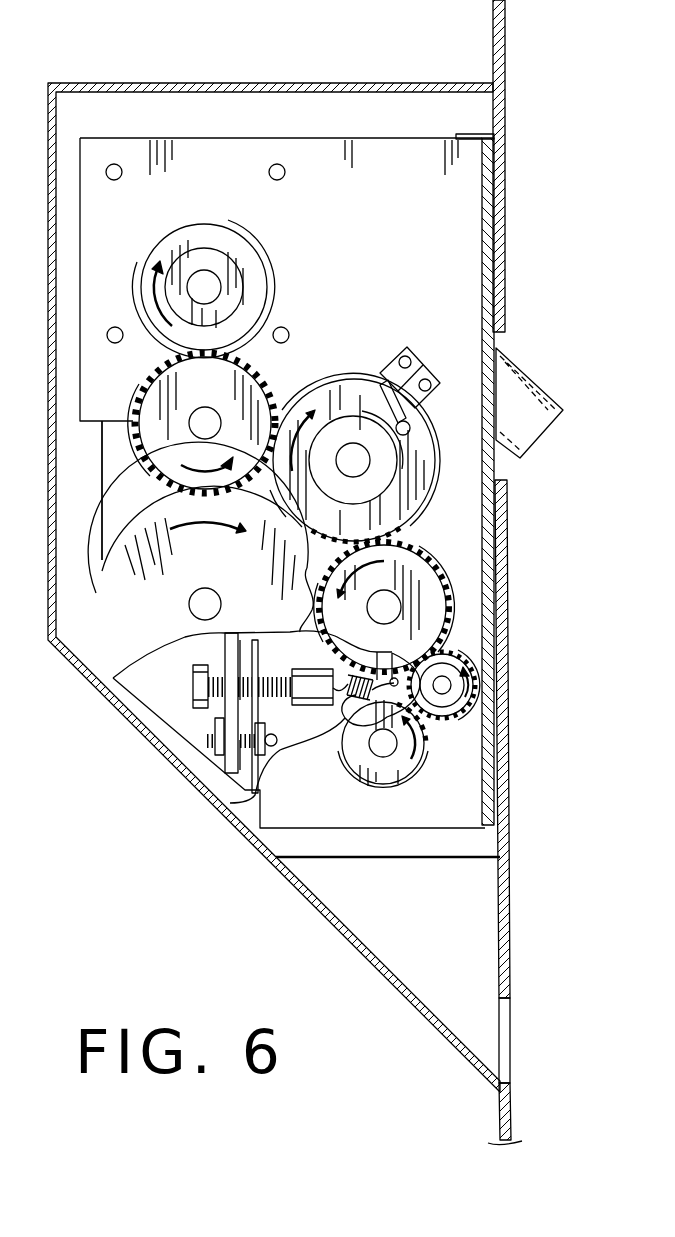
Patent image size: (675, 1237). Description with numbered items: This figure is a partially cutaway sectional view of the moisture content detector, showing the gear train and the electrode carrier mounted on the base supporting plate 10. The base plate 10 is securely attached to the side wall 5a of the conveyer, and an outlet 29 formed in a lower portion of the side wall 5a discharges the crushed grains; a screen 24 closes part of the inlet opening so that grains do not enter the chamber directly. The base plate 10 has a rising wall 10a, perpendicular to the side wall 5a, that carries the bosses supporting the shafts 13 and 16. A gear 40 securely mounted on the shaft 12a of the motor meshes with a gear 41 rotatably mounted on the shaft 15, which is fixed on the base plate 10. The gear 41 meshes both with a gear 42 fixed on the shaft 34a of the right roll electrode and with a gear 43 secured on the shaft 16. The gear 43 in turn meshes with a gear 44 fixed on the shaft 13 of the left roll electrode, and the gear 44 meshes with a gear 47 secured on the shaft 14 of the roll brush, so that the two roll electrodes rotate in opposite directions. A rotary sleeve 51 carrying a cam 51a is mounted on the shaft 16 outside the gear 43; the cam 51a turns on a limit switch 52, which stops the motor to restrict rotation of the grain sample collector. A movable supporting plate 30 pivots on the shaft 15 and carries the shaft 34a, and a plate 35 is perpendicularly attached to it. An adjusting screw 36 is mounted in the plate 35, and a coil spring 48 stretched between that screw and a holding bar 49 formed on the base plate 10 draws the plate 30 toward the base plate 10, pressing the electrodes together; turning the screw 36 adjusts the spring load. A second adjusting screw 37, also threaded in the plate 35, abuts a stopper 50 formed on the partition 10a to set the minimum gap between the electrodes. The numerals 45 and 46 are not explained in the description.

The base supporting plate 10 is at (487, 217).
The rising wall 10a is at (227, 152).
The screen 24 is at (502, 182).
The side wall 5a is at (505, 947).
The outlet 29 is at (537, 1053).
The gear 40 is at (233, 289).
The shaft of the motor 12a is at (218, 290).
The gear 41 is at (193, 423).
The shaft 15 is at (232, 406).
The movable supporting plate 30 is at (112, 476).
The gear 42 is at (186, 542).
The shaft 34a is at (200, 612).
The gear 43 is at (372, 429).
The shaft 16 is at (358, 465).
The rotary sleeve 51 is at (380, 455).
The cam 51a is at (377, 395).
The limit switch 52 is at (420, 368).
The gear 44 is at (396, 607).
The shaft 13 is at (390, 607).
The small gear 46 is at (447, 692).
The shaft 45 is at (443, 695).
The gear 47 is at (406, 760).
The shaft 14 is at (392, 770).
The plate 35 is at (233, 652).
The adjusting screw 37 is at (166, 758).
The adjusting screw 36 is at (193, 687).
The stopper 50 is at (277, 740).
The holding bar 49 is at (378, 662).
The coil spring 48 is at (360, 698).